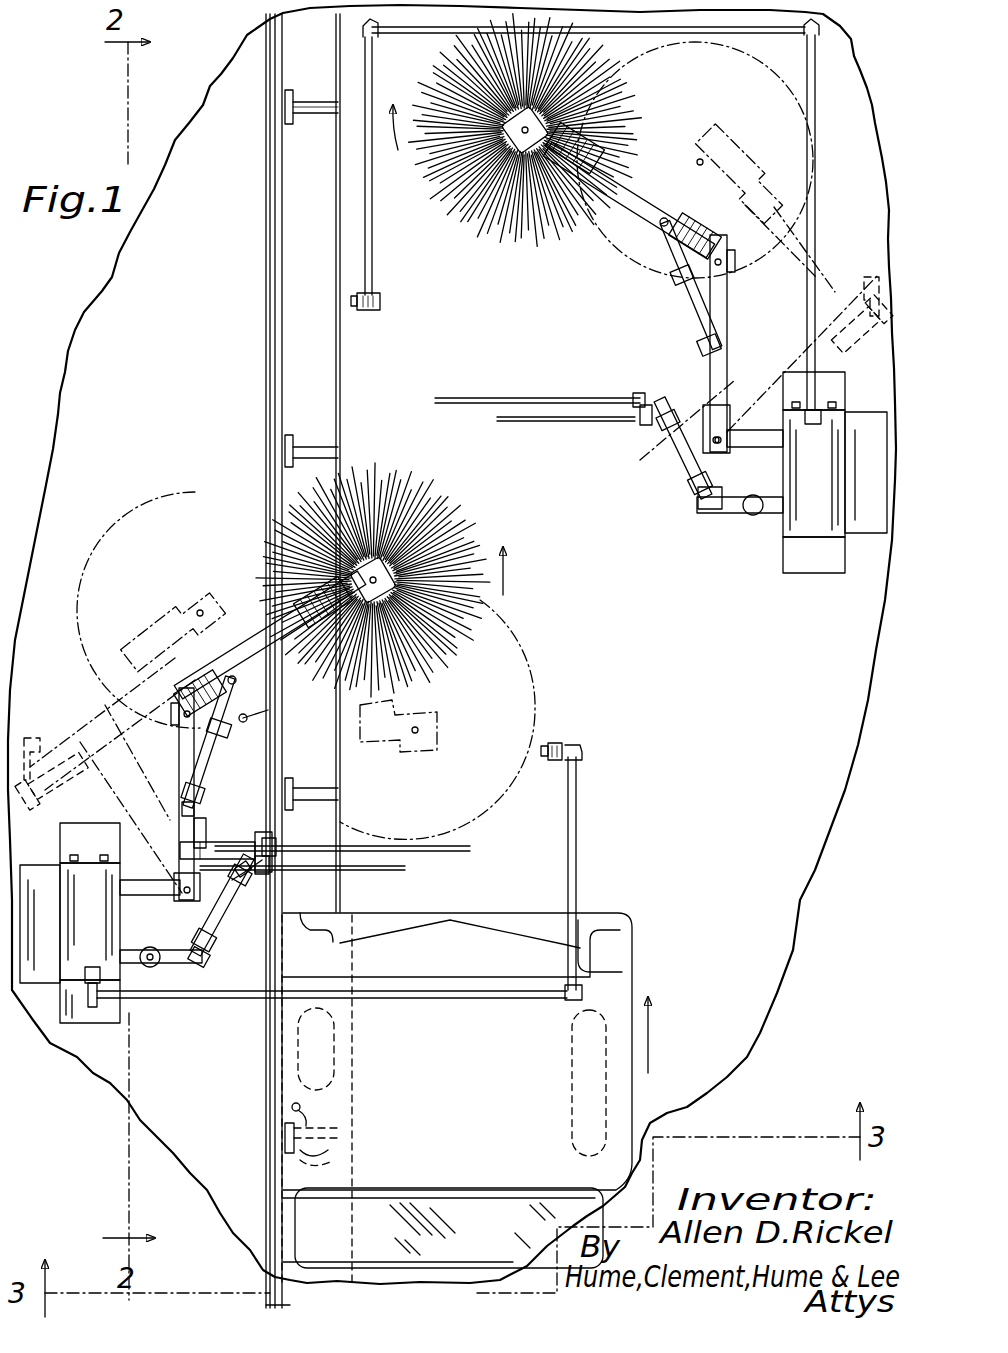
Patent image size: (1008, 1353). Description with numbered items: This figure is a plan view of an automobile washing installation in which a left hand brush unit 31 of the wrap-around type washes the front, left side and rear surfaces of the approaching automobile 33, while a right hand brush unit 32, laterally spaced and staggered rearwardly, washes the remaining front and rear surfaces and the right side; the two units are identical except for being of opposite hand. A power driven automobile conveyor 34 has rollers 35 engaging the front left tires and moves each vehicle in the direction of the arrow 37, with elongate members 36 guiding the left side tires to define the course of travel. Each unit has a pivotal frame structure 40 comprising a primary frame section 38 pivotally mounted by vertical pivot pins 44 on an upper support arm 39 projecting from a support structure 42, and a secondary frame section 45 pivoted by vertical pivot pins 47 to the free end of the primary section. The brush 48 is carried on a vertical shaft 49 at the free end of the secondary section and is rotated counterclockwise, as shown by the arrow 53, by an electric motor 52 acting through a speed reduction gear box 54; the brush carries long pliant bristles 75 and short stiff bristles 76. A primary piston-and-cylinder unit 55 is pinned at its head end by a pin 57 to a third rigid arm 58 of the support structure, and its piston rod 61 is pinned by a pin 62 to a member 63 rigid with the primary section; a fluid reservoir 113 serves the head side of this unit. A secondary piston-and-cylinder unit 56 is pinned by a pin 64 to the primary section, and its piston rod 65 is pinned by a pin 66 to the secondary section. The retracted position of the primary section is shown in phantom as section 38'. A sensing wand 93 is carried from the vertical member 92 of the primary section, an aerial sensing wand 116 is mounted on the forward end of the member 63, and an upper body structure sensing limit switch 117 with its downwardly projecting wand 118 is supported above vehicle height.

The left hand brush unit 31 is at (505, 625).
The right hand brush unit 32 is at (625, 258).
The automobile 33 is at (487, 1099).
The power driven automobile conveyor 34 is at (280, 661).
The rollers 35 is at (318, 115).
The elongate members 36 is at (275, 262).
The arrow 37 is at (494, 1132).
The primary frame section 38 is at (454, 584).
The primary frame section in retracted position 38' is at (454, 554).
The upper support arm 39 is at (451, 707).
The pivotal frame structure 40 is at (177, 741).
The support structure 42 is at (453, 697).
The vertical pivot pins 44 is at (450, 666).
The secondary frame section 45 is at (258, 650).
The vertical pivot pins 47 is at (186, 684).
The brush 48 is at (183, 492).
The vertical shaft 49 is at (185, 600).
The electric motor 52 is at (630, 133).
The arrow 53 is at (503, 575).
The speed reduction gear box 54 is at (430, 672).
The primary piston-and-cylinder unit 55 is at (222, 925).
The secondary piston-and-cylinder unit 56 is at (215, 762).
The pin 57 is at (205, 962).
The third rigid arm 58 is at (180, 946).
The piston rod 61 is at (250, 875).
The pin 62 is at (265, 840).
The member 63 is at (232, 843).
The pin 64 is at (180, 808).
The piston rod 65 is at (215, 706).
The pin 66 is at (233, 676).
The long pliant bristles 75 is at (540, 233).
The short stiff bristles 76 is at (505, 165).
The vertical member 92 is at (180, 828).
The sensing wand 93 is at (556, 421).
The fluid reservoir 113 is at (112, 992).
The wand 116 is at (588, 398).
The upper body structure sensing limit switch 117 is at (380, 300).
The wand 118 is at (362, 312).